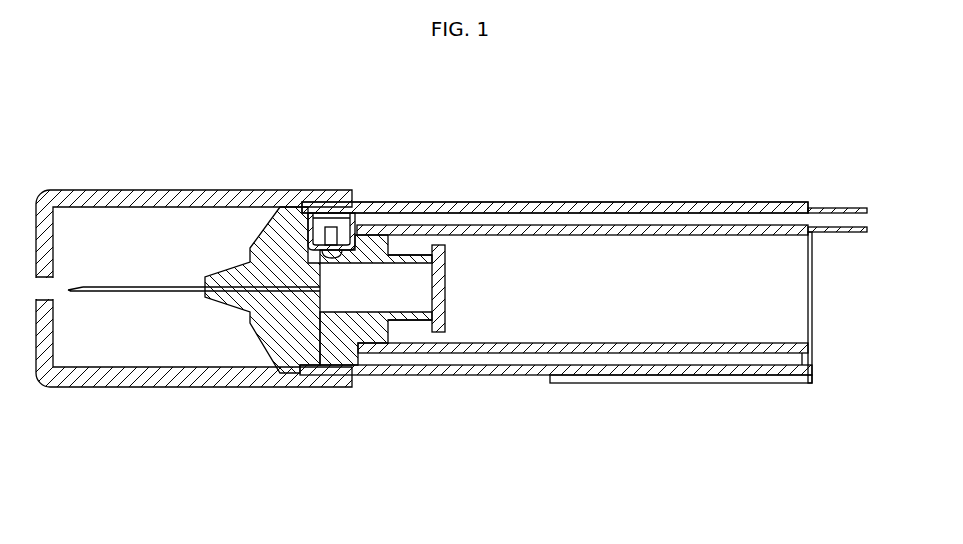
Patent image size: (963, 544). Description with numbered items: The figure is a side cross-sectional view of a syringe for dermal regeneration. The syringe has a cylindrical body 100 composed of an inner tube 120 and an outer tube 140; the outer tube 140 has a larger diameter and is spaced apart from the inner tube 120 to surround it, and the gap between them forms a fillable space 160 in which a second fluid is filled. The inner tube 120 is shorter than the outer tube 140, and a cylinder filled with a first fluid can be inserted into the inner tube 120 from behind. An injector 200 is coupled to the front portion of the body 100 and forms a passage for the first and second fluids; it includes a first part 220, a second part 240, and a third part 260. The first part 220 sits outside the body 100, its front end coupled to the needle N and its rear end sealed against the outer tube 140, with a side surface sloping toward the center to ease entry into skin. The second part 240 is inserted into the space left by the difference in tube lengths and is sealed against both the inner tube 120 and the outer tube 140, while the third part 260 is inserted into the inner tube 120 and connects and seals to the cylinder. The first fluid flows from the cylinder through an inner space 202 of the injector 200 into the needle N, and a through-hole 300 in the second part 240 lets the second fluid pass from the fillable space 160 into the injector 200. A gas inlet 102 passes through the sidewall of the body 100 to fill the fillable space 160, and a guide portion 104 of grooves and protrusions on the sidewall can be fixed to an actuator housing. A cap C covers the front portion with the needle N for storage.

The cap C is at (99, 190).
The needle N is at (108, 293).
The body 100 is at (595, 288).
The gas inlet 102 is at (840, 207).
The guide portion 104 is at (627, 383).
The inner tube 120 is at (775, 237).
The outer tube 140 is at (747, 203).
The fillable space 160 is at (562, 217).
The injector 200 is at (321, 361).
The inner space 202 is at (412, 282).
The first part 220 is at (272, 345).
The second part 240 is at (328, 348).
The third part 260 is at (402, 318).
The through-hole 300 is at (312, 207).